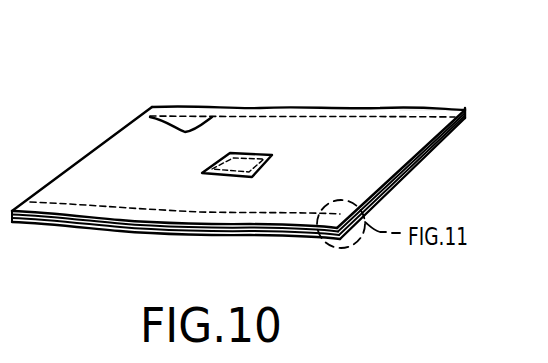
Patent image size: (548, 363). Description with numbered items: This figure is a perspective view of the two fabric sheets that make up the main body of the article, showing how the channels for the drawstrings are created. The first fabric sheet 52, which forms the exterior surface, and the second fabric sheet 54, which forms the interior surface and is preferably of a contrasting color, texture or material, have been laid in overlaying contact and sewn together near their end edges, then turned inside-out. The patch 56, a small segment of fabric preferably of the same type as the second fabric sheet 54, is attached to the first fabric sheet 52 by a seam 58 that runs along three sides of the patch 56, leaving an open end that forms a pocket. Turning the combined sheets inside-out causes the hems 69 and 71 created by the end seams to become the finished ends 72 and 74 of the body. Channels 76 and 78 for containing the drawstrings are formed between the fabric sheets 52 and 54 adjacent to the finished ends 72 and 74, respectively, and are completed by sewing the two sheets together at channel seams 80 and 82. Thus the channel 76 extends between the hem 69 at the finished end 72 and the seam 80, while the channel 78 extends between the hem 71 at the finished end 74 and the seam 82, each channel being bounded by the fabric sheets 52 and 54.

The first fabric sheet 52 is at (409, 127).
The second fabric sheet 54 is at (443, 159).
The patch 56 is at (247, 163).
The seam 58 is at (262, 157).
The hem 69 is at (180, 231).
The hem 71 is at (452, 110).
The finished end 72 is at (123, 229).
The finished end 74 is at (255, 107).
The channel 76 is at (45, 212).
The channel 78 is at (190, 107).
The channel seam 80 is at (85, 202).
The channel seam 82 is at (150, 117).